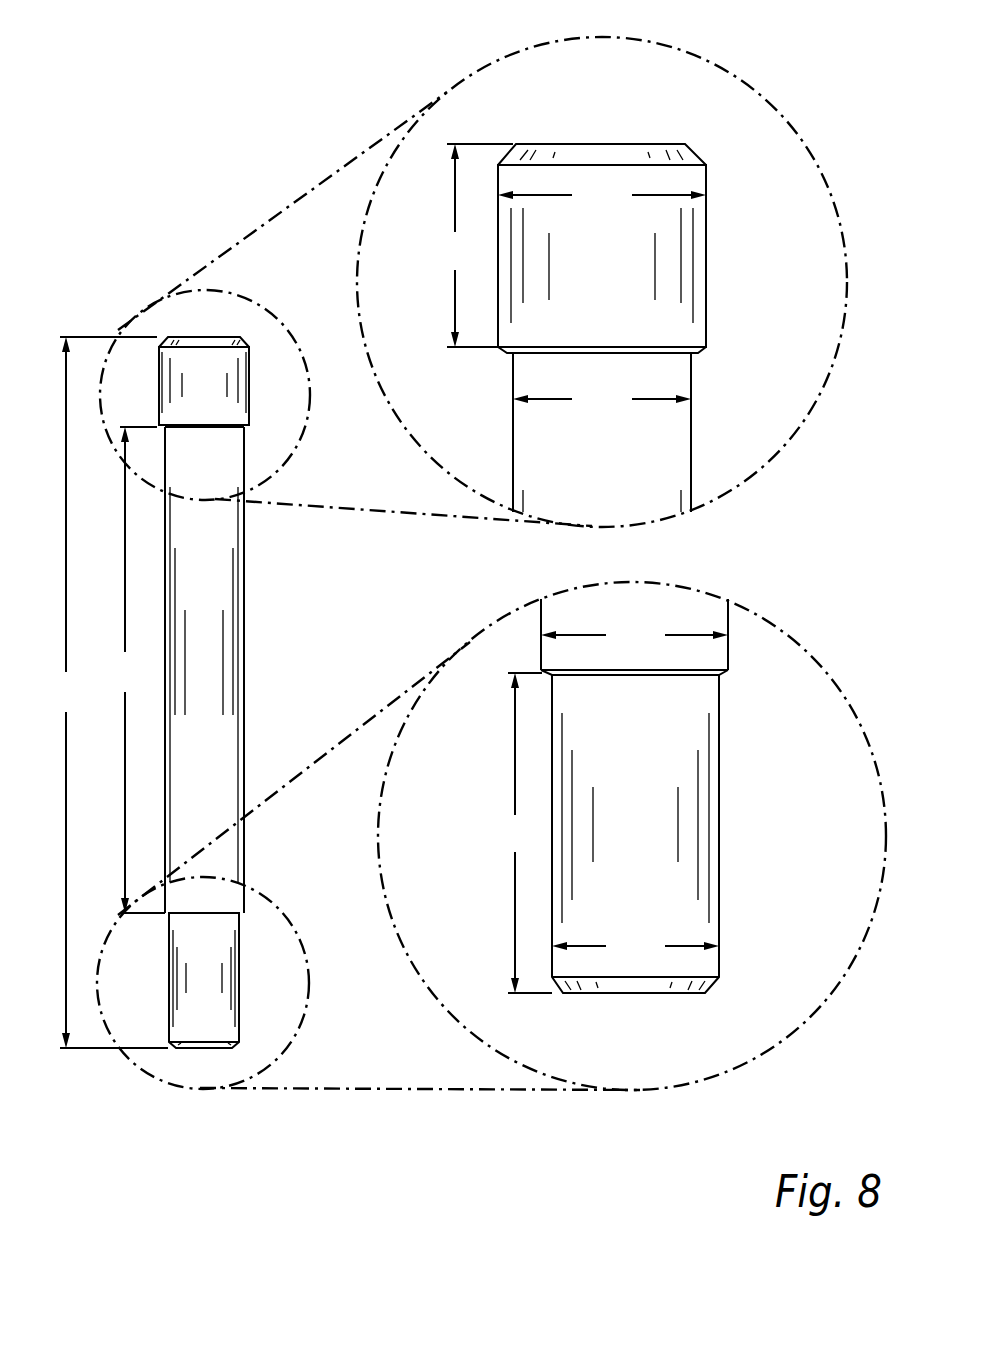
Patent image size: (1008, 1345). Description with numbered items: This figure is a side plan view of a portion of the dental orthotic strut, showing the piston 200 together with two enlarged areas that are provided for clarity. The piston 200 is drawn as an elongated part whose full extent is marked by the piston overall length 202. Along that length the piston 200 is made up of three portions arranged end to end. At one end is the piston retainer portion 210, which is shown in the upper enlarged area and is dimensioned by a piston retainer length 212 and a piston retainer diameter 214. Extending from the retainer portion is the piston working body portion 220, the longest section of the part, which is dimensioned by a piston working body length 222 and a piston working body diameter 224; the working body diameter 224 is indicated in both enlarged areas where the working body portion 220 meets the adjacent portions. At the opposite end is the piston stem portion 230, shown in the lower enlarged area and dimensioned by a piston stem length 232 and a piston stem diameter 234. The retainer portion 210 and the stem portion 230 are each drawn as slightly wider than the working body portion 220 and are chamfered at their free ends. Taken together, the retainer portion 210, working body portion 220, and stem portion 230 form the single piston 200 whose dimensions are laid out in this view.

The piston 200 is at (130, 274).
The piston overall length 202 is at (106, 692).
The piston retainer portion 210 is at (249, 375).
The piston retainer length 212 is at (473, 245).
The piston retainer diameter 214 is at (602, 197).
The piston working body portion 220 is at (243, 622).
The piston working body length 222 is at (133, 670).
The piston working body diameter 224 is at (620, 519).
The piston stem portion 230 is at (239, 990).
The piston stem length 232 is at (522, 833).
The piston stem diameter 234 is at (635, 946).